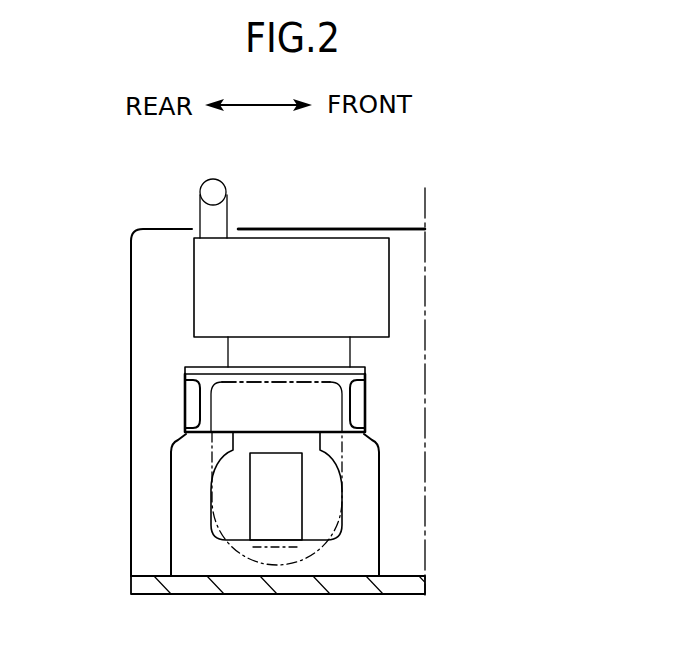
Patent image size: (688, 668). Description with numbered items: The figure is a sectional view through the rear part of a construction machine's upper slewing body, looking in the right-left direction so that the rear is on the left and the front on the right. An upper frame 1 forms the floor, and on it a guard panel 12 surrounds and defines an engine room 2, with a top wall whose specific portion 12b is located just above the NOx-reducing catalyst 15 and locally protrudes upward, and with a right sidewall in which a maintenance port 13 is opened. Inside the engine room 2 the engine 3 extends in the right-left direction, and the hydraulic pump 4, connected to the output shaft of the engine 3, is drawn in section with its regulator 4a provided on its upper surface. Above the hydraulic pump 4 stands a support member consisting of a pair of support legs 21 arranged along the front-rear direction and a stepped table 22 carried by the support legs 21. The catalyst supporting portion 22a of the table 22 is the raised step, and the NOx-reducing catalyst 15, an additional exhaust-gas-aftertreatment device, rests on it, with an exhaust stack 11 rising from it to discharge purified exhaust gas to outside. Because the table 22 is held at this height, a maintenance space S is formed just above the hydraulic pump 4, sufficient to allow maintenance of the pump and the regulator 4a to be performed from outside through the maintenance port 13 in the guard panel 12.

The upper frame 1 is at (178, 594).
The engine room 2 is at (250, 373).
The engine 3 is at (260, 565).
The hydraulic pump 4 is at (292, 537).
The regulator 4a is at (302, 468).
The exhaust stack 11 is at (229, 212).
The guard panel 12 is at (131, 396).
The specific portion 12b is at (350, 229).
The maintenance port 13 is at (215, 462).
The NOx-reducing catalyst 15 is at (389, 296).
The support legs 21 is at (171, 517).
The table 22 is at (305, 370).
The catalyst supporting portion 22a is at (208, 367).
The maintenance space S is at (293, 422).